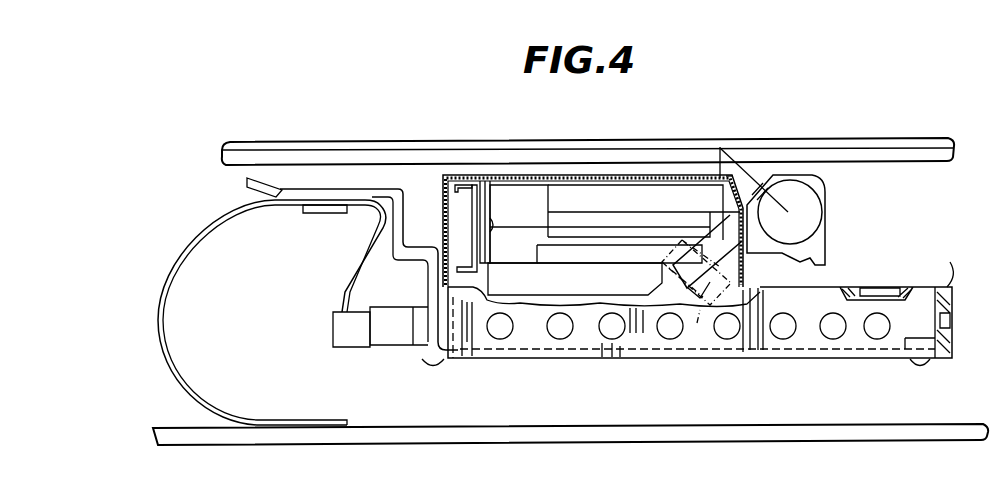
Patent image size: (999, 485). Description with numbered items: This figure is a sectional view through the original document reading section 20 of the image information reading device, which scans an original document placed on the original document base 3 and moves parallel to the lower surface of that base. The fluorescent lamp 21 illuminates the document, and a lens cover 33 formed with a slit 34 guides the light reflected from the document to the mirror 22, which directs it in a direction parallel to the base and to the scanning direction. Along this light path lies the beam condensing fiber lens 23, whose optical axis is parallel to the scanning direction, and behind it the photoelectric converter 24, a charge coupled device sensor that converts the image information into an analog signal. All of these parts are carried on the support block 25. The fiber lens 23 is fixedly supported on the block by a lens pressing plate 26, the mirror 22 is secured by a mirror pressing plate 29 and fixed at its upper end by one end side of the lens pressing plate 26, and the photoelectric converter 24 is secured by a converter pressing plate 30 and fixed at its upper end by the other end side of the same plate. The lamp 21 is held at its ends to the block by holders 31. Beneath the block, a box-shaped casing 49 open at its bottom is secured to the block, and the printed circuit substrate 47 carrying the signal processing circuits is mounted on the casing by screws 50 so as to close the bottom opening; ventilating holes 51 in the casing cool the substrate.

The original document base 3 is at (820, 152).
The original document reading section 20 is at (418, 177).
The fluorescent lamp 21 is at (802, 210).
The mirror 22 is at (720, 245).
The beam condensing fiber lens 23 is at (607, 217).
The photoelectric converter 24 is at (493, 203).
The support block 25 is at (548, 290).
The lens pressing plate 26 is at (557, 196).
The mirror pressing plate 29 is at (697, 323).
The converter pressing plate 30 is at (472, 203).
The holder 31 is at (815, 247).
The lens cover 33 is at (663, 177).
The slit 34 is at (720, 147).
The printed circuit substrate 47 is at (447, 360).
The box-shaped casing 49 is at (178, 380).
The screws 50 is at (428, 366).
The ventilating holes 51 is at (943, 320).